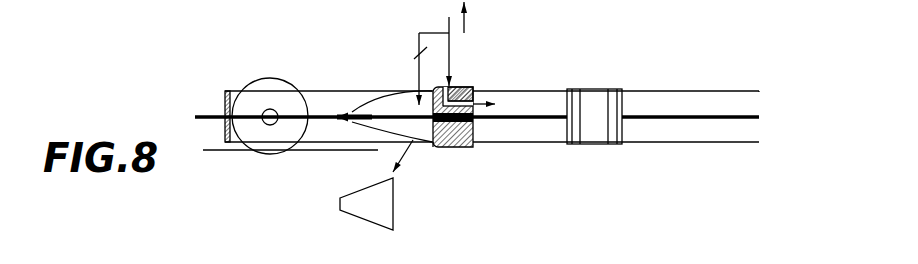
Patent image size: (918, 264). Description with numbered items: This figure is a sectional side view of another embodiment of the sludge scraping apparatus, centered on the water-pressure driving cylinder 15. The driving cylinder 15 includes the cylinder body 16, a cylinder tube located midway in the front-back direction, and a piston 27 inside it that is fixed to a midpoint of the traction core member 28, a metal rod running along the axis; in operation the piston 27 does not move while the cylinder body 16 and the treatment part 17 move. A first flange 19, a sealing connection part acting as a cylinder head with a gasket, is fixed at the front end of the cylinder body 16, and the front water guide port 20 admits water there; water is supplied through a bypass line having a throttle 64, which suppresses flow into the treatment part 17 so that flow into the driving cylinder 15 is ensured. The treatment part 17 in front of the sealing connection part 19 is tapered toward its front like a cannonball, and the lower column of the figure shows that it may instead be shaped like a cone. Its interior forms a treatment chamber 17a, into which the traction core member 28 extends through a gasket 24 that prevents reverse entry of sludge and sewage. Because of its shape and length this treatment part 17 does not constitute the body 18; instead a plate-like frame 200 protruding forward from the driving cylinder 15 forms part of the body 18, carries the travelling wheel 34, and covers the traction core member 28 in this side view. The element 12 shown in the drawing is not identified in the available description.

The guide wire 12 is at (217, 150).
The water-pressure driving cylinder 15 is at (652, 144).
The cylinder body 16 is at (752, 144).
The treatment part 17 is at (378, 102).
The treatment chamber 17a is at (402, 100).
The body 18 is at (455, 148).
The first flange 19 is at (473, 139).
The front water guide port 20 is at (452, 97).
The gasket 24 is at (435, 142).
The piston 27 is at (593, 135).
The traction core member 28 is at (298, 117).
The travelling wheel 34 is at (268, 69).
The throttle 64 is at (425, 61).
The frame 200 is at (323, 145).